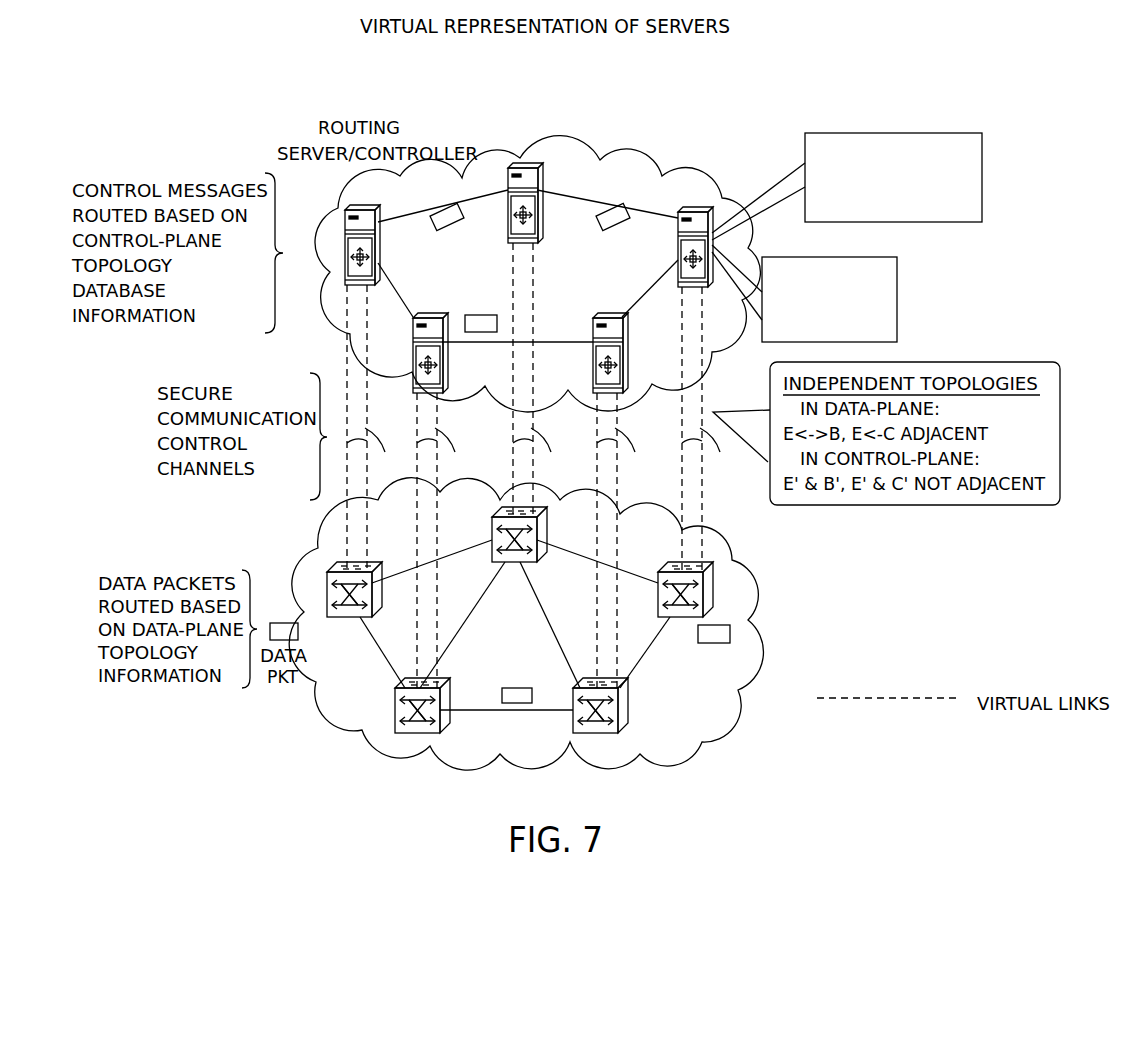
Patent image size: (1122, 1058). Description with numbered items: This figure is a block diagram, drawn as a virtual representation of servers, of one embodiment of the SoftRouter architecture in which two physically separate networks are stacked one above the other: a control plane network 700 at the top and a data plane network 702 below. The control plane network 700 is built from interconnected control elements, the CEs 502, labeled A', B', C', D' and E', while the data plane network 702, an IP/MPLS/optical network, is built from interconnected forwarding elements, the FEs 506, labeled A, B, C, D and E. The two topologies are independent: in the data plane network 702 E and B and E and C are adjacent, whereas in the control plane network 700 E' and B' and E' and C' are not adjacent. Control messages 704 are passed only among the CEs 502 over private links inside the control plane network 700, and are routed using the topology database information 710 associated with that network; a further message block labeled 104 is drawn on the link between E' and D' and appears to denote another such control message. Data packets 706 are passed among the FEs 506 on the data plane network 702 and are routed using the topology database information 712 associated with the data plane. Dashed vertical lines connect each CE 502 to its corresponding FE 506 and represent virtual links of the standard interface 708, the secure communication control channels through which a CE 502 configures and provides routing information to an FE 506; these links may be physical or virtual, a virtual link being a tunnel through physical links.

The control message 104 is at (620, 205).
The control element (CE) 502 is at (344, 212).
The forwarding element (FE) 506 is at (492, 532).
The control plane network 700 is at (533, 297).
The data plane network 702 is at (530, 667).
The control message 704 is at (436, 203).
The data packet 706 is at (286, 623).
The standard interface 708 is at (540, 453).
The topology database information 710 is at (983, 165).
The topology database information 712 is at (898, 282).